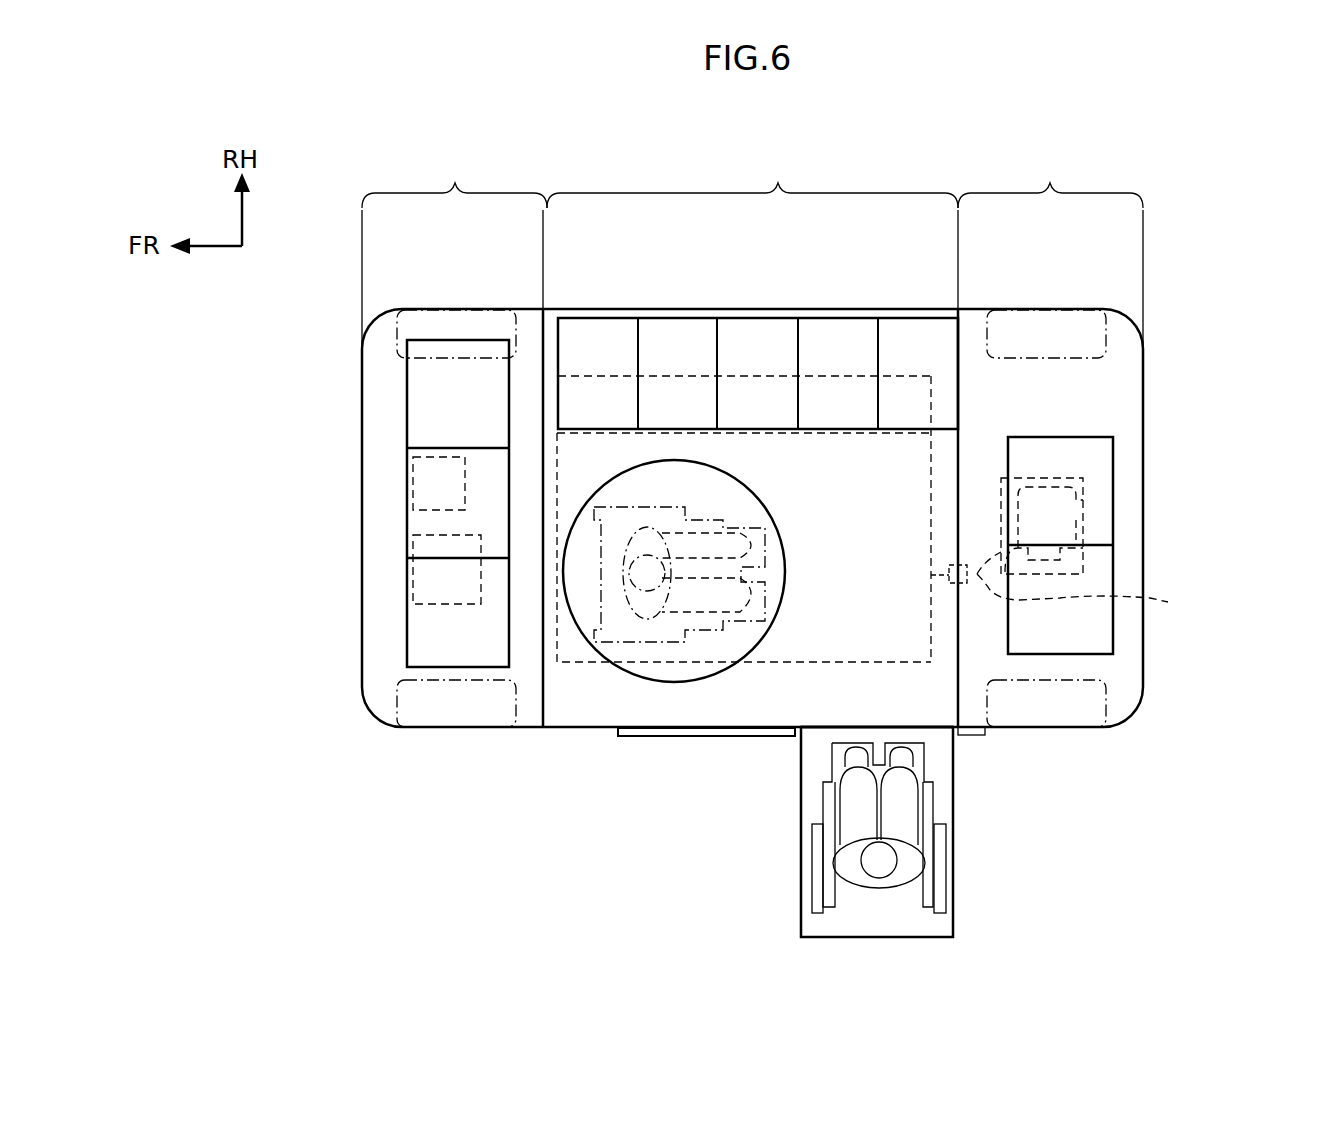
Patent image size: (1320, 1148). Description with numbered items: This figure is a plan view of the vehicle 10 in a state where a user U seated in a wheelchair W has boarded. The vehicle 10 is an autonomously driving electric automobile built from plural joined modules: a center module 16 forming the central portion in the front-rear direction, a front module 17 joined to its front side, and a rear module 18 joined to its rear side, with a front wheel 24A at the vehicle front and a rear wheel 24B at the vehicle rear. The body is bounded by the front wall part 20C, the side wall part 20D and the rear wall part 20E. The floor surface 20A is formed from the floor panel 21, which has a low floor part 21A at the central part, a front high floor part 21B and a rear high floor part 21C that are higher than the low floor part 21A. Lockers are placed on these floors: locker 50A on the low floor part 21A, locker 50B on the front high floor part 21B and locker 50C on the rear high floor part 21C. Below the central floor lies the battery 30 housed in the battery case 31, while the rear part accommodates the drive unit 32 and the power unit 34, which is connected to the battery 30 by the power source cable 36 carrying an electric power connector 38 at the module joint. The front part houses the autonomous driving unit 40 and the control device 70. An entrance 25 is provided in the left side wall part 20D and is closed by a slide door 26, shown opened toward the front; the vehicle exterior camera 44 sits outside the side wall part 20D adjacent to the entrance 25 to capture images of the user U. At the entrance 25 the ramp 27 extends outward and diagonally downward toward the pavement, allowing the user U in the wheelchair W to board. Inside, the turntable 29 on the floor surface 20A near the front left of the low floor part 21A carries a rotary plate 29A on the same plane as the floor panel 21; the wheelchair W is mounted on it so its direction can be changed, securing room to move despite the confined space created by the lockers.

The vehicle 10 is at (1160, 303).
The center module 16 is at (752, 180).
The front module 17 is at (454, 180).
The rear module 18 is at (1050, 180).
The floor surface 20A is at (601, 703).
The front wall part 20C is at (362, 652).
The side wall part 20D is at (597, 307).
The rear wall part 20E is at (1145, 387).
The floor panel 21 is at (711, 704).
The low floor part 21A is at (565, 703).
The front high floor part 21B is at (372, 428).
The rear high floor part 21C is at (1088, 379).
The front wheel 24A is at (447, 727).
The rear wheel 24B is at (1056, 727).
The entrance 25 is at (928, 717).
The slide door 26 is at (752, 738).
The ramp 27 is at (811, 923).
The turntable 29 is at (748, 486).
The rotary plate 29A is at (773, 574).
The battery 30 is at (845, 400).
The battery case 31 is at (832, 376).
The drive unit 32 is at (1045, 510).
The power unit 34 is at (1003, 478).
The power source cable 36 is at (1091, 583).
The electric power connector 38 is at (950, 567).
The autonomous driving unit 40 is at (425, 585).
The vehicle exterior camera 44 is at (977, 737).
The locker 50A is at (683, 340).
The locker 50B is at (430, 395).
The locker 50C is at (1090, 630).
The control device 70 is at (425, 487).
The user U is at (643, 575).
The wheelchair W is at (657, 520).